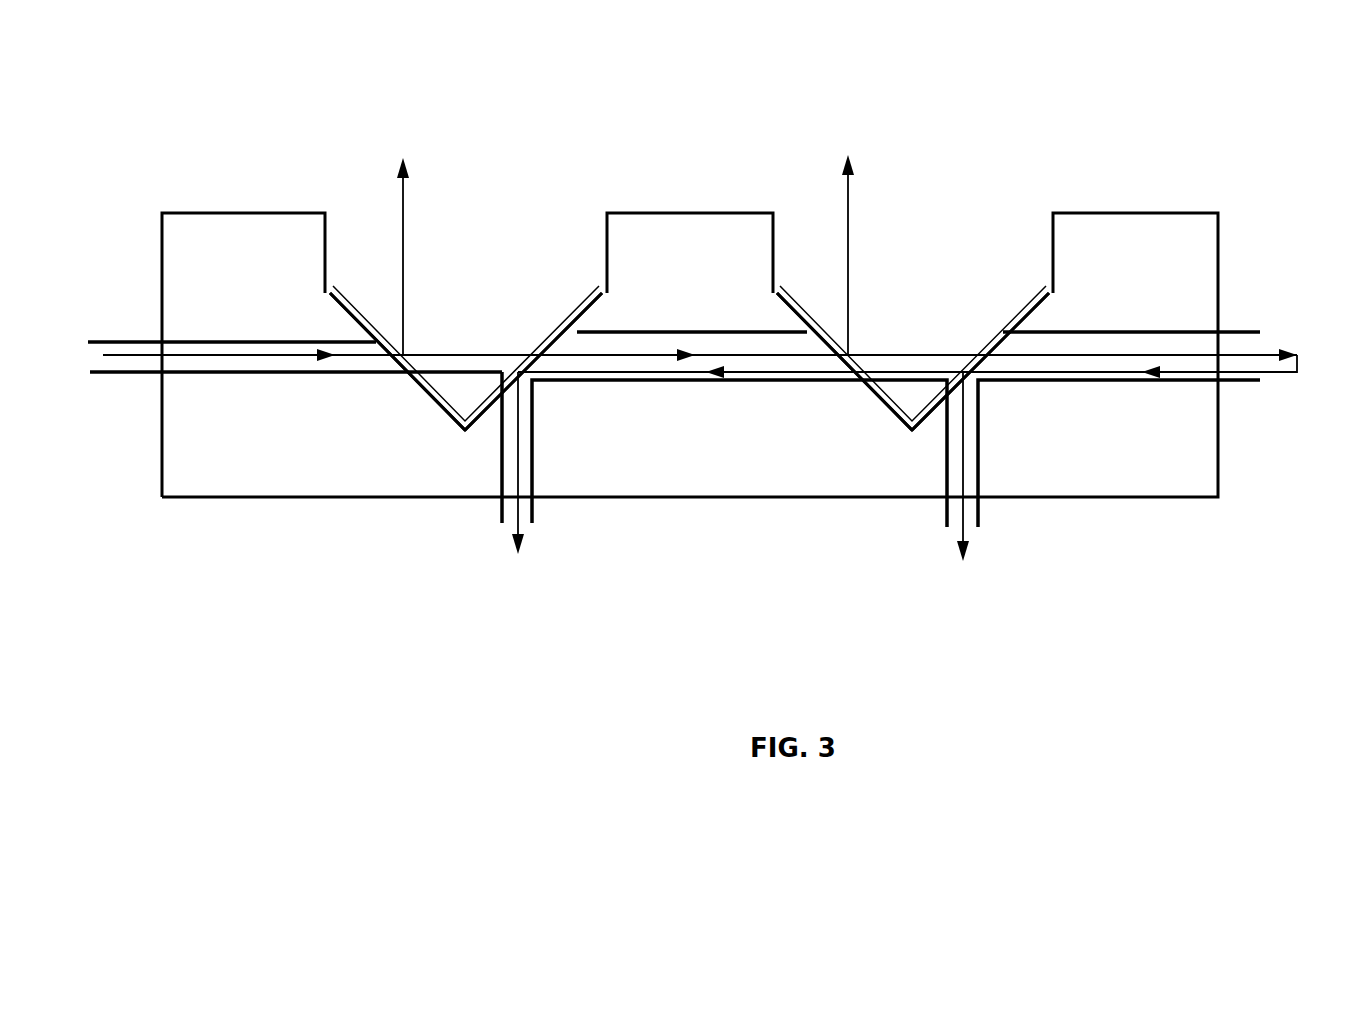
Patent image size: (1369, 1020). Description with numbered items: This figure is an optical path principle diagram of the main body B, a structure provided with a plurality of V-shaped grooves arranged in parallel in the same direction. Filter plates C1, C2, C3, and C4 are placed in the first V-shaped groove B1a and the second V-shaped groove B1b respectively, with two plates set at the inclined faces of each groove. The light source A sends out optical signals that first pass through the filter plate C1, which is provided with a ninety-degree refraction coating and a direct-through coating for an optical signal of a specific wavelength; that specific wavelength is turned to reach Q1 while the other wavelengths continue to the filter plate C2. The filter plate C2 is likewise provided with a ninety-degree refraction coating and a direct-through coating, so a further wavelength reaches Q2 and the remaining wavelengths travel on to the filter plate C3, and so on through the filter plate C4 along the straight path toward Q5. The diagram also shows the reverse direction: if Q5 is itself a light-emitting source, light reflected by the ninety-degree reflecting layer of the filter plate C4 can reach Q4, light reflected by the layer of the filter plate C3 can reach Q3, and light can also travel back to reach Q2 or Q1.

The light source A is at (676, 358).
The main body B is at (680, 395).
The first V-shaped groove B1a is at (442, 431).
The second V-shaped groove B1b is at (967, 422).
The filter plate C1 is at (397, 309).
The filter plate C2 is at (533, 309).
The filter plate C3 is at (844, 306).
The filter plate C4 is at (980, 306).
The output port Q1 is at (405, 238).
The output port Q2 is at (722, 480).
The output port Q3 is at (849, 235).
The output port Q4 is at (1102, 465).
The output port Q5 is at (936, 365).